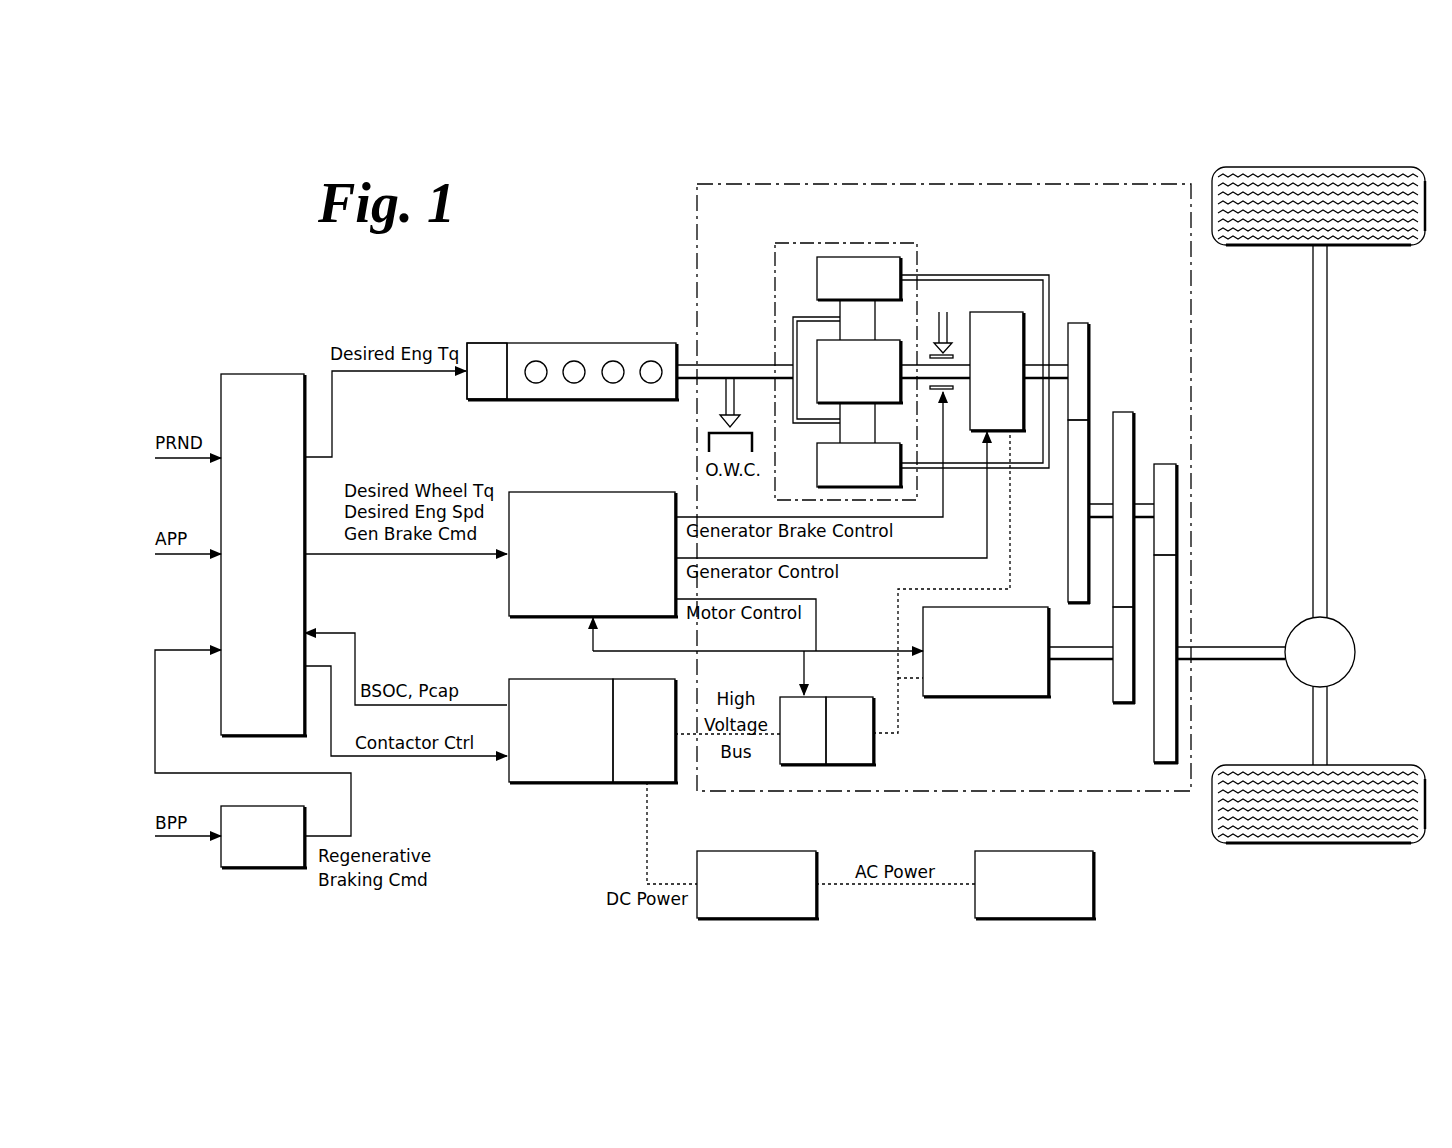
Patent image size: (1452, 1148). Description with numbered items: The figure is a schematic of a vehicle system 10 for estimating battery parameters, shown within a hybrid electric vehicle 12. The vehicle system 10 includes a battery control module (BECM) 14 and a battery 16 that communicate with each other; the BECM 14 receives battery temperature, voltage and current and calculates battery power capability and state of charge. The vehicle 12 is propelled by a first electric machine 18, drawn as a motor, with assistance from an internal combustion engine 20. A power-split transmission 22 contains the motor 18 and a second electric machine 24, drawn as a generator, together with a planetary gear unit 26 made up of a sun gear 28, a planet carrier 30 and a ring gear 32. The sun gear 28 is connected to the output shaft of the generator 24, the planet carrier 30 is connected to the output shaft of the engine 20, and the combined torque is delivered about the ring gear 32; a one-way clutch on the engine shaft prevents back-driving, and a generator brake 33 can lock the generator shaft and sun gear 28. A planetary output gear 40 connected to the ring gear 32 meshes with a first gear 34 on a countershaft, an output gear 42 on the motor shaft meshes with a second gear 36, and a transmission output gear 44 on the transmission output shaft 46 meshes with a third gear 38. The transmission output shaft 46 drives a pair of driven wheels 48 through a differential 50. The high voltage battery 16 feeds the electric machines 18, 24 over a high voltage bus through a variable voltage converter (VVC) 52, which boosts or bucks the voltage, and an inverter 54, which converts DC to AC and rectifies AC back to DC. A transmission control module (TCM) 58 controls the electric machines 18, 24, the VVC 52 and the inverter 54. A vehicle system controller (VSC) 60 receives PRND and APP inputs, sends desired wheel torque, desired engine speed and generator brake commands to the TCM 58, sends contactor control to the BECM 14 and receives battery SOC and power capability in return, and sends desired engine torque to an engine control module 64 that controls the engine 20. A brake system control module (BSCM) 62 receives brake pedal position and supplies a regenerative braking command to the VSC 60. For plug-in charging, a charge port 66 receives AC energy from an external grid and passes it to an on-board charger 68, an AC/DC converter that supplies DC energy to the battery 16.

The vehicle system 10 is at (540, 808).
The vehicle 12 is at (1103, 95).
The battery control module (BECM) 14 is at (561, 731).
The battery 16 is at (645, 731).
The electric machine 18 is at (990, 697).
The internal combustion engine 20 is at (522, 343).
The transmission 22 is at (1061, 184).
The second electric machine 24 is at (1010, 312).
The planetary gear unit 26 is at (917, 258).
The sun gear 28 is at (793, 357).
The planet carrier 30 is at (803, 318).
The ring gear 32 is at (793, 263).
The generator brake 33 is at (955, 355).
The first gear 34 is at (1067, 476).
The second gear 36 is at (1133, 427).
The third gear 38 is at (1176, 506).
The planetary output gear 40 is at (1088, 338).
The output gear 42 is at (1113, 652).
The transmission output gear 44 is at (1176, 578).
The transmission output shaft 46 is at (1221, 660).
The driven wheels 48 is at (1303, 167).
The differential 50 is at (1338, 623).
The variable voltage converter (VVC) 52 is at (803, 731).
The inverter 54 is at (851, 731).
The transmission control module (TCM) 58 is at (590, 492).
The vehicle system controller (VSC) 60 is at (264, 555).
The brake system control module (BSCM) 62 is at (262, 870).
The engine control module 64 is at (488, 400).
The charge port 66 is at (1033, 851).
The on-board charger 68 is at (755, 851).